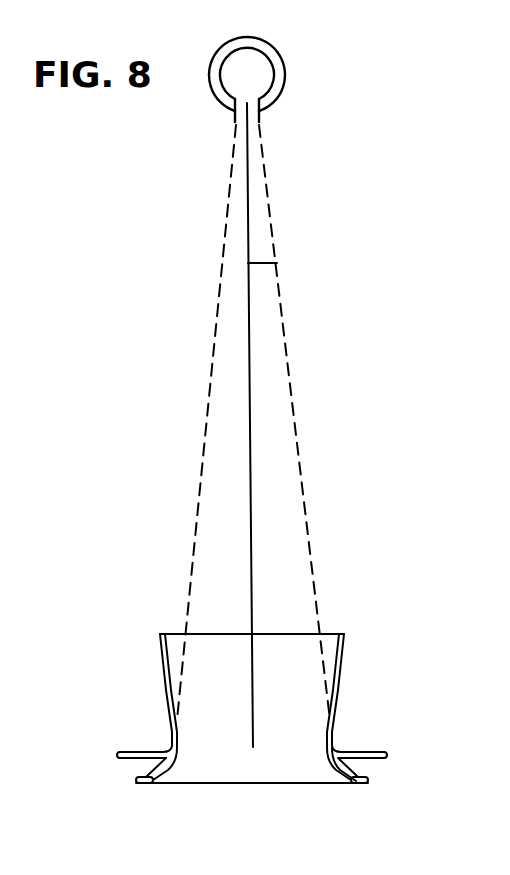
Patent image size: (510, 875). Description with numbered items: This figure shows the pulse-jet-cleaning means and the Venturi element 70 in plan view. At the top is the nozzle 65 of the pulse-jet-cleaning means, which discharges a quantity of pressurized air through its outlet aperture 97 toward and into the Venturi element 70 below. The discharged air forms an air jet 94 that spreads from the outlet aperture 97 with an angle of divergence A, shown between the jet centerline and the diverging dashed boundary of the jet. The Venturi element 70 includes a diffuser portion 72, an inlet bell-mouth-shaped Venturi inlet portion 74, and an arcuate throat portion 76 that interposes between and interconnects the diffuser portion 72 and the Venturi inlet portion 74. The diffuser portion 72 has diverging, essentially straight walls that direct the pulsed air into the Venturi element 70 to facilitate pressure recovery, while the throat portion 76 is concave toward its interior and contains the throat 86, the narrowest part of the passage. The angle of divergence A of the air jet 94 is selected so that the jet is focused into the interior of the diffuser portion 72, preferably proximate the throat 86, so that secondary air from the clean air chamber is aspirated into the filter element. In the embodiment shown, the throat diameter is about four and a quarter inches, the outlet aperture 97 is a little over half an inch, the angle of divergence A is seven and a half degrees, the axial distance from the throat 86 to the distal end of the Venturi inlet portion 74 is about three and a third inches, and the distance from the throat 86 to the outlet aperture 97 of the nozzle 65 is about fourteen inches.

The nozzle 65 is at (292, 57).
The outlet aperture 97 is at (259, 110).
The air jet 94 is at (267, 432).
The angle of divergence A is at (258, 263).
The Venturi element 70 is at (353, 697).
The diffuser portion 72 is at (148, 654).
The throat portion 76 is at (155, 740).
The Venturi inlet portion 74 is at (158, 786).
The throat 86 is at (330, 738).